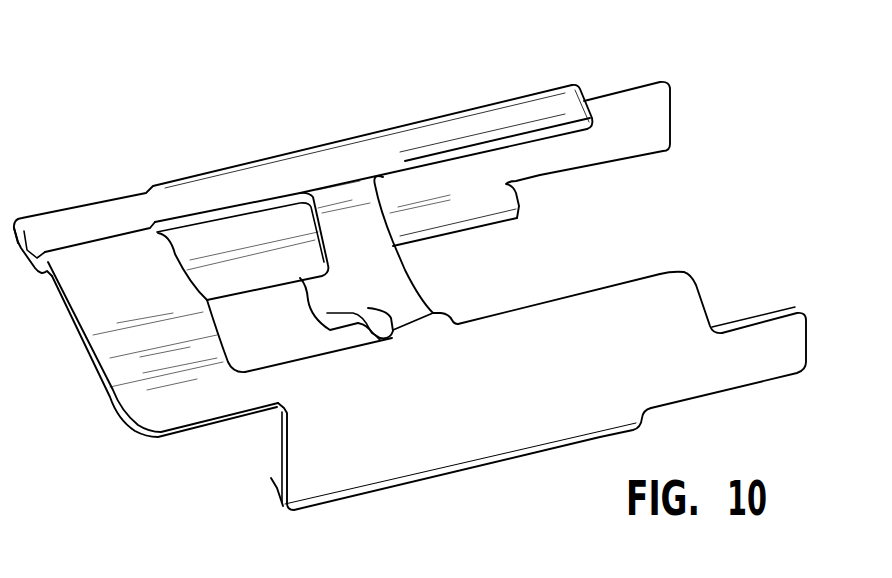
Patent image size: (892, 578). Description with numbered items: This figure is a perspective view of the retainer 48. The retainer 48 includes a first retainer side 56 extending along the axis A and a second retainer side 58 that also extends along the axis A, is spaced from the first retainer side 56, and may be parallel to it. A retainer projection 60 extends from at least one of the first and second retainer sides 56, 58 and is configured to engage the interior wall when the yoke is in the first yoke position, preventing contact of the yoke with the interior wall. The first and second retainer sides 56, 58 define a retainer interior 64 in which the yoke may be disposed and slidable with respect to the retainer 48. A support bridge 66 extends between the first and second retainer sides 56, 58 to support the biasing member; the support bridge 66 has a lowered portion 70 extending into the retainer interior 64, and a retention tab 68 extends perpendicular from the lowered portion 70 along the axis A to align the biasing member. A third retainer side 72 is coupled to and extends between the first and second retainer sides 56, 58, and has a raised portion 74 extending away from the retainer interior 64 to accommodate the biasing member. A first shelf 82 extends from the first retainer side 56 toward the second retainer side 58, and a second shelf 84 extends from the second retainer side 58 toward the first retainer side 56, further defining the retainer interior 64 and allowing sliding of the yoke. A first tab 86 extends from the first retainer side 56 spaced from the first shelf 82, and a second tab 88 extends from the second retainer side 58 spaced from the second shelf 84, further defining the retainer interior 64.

The retainer 48 is at (66, 170).
The first retainer side 56 is at (467, 443).
The second retainer side 58 is at (453, 182).
The retainer projection 60 is at (672, 115).
The retainer interior 64 is at (560, 261).
The support bridge 66 is at (367, 277).
The retention tab 68 is at (310, 303).
The lowered portion 70 is at (396, 278).
The third retainer side 72 is at (116, 318).
The raised portion 74 is at (116, 297).
The first shelf 82 is at (270, 478).
The second shelf 84 is at (493, 212).
The first tab 86 is at (652, 292).
The second tab 88 is at (528, 120).